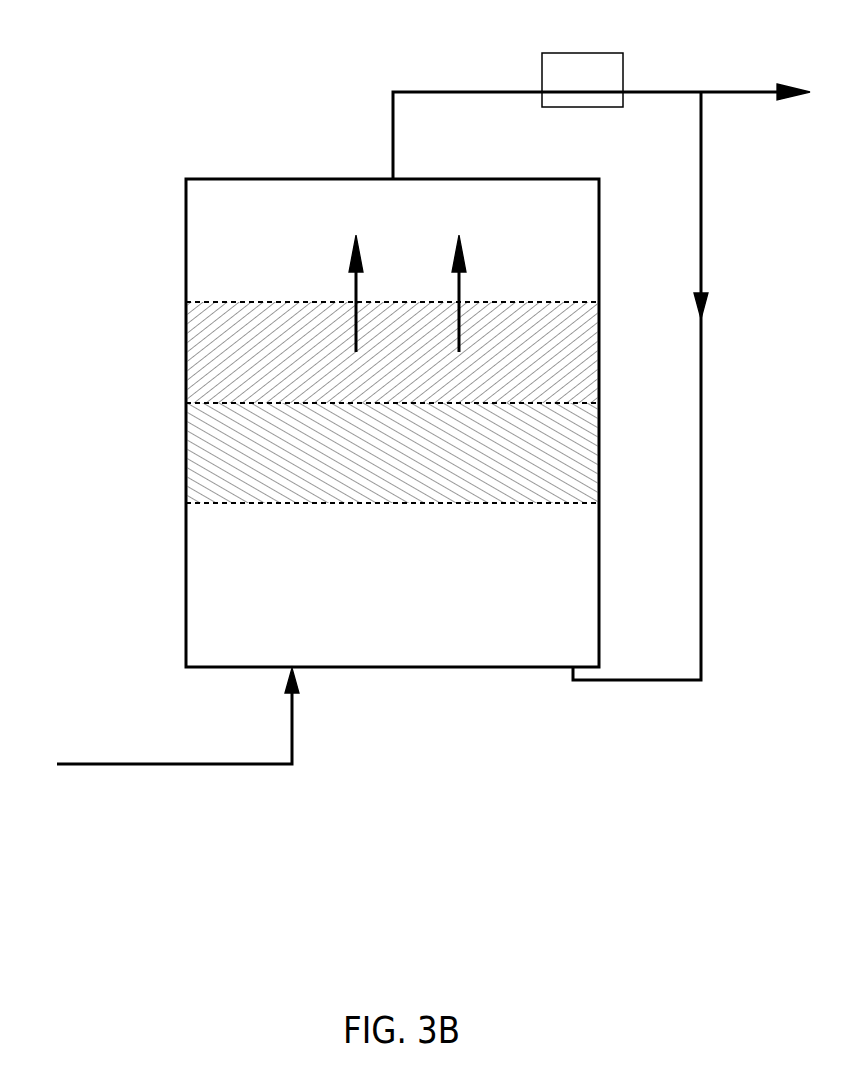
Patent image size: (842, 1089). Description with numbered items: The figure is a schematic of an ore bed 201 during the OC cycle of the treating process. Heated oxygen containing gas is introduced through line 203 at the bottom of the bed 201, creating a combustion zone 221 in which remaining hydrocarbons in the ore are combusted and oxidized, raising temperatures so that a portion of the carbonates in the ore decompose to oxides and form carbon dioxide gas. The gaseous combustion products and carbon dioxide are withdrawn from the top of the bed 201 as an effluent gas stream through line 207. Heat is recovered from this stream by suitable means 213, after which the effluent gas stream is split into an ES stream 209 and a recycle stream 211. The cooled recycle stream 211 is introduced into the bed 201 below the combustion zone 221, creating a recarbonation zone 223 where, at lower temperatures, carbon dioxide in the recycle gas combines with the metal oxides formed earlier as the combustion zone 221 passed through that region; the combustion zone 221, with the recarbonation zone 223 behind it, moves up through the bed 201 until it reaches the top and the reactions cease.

The bed 201 is at (338, 608).
The line 203 is at (187, 764).
The line 207 is at (427, 95).
The ES stream 209 is at (740, 90).
The recycle stream 211 is at (704, 265).
The suitable means 213 is at (580, 68).
The combustion zone 221 is at (553, 363).
The recarbonation zone 223 is at (527, 460).